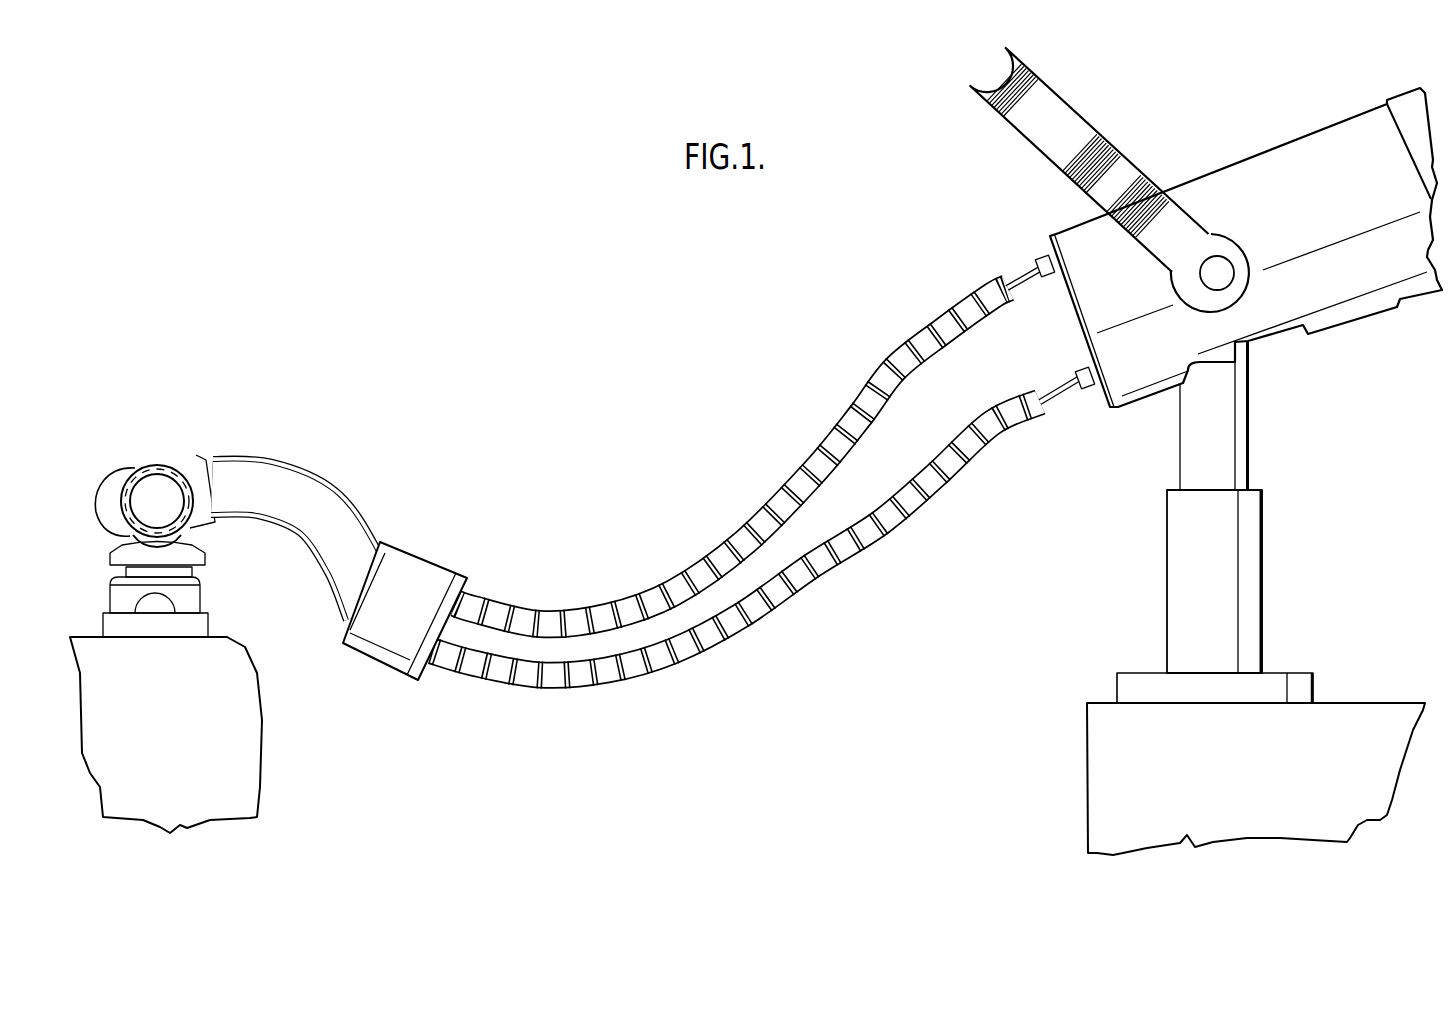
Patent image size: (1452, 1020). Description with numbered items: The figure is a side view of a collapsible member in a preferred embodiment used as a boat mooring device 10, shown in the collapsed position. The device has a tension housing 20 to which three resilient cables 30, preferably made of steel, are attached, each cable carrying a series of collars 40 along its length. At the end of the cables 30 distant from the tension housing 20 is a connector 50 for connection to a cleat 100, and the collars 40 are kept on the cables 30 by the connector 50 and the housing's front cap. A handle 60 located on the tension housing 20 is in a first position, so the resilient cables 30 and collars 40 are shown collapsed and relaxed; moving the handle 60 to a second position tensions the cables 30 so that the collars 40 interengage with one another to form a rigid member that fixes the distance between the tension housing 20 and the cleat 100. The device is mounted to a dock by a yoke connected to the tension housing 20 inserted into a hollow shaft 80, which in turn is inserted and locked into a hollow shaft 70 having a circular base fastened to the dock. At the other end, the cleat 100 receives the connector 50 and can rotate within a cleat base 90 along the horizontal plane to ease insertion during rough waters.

The boat mooring device 10 is at (671, 437).
The tension housing 20 is at (1232, 163).
The resilient cables 30 is at (1060, 383).
The collars 40 is at (890, 353).
The connector 50 is at (439, 550).
The handle 60 is at (1072, 102).
The hollow shaft 70 is at (1263, 592).
The hollow shaft 80 is at (1254, 455).
The cleat base 90 is at (207, 590).
The cleat 100 is at (114, 474).